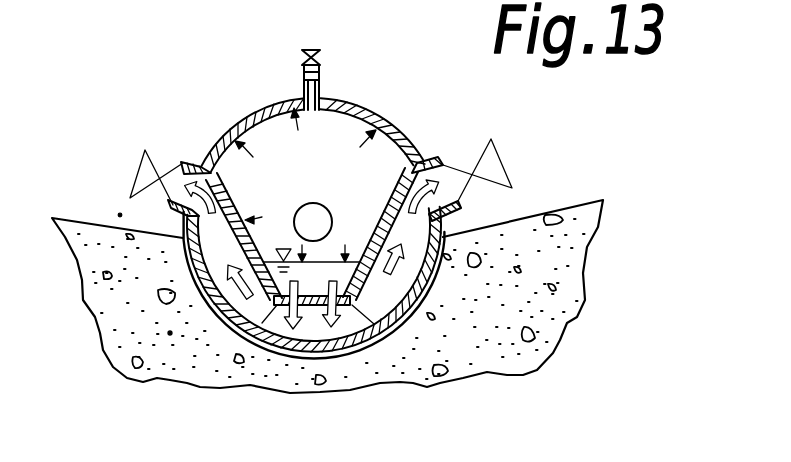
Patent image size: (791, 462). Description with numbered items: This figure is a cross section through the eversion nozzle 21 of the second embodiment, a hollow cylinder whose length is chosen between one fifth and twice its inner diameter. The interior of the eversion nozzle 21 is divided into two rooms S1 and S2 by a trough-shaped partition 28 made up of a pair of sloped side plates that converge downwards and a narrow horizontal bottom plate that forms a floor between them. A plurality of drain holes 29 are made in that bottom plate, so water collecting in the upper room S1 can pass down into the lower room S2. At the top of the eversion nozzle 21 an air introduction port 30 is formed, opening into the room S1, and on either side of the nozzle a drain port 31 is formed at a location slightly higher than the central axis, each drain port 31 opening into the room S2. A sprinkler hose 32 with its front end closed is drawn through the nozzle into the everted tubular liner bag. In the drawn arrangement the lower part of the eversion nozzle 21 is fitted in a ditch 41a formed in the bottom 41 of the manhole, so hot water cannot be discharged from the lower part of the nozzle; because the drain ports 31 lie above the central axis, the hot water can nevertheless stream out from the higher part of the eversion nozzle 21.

The eversion nozzle 21 is at (396, 116).
The partition 28 is at (383, 218).
The drain holes 29 is at (306, 316).
The air introduction port 30 is at (320, 80).
The drain port 31 is at (172, 162).
The sprinkler hose 32 is at (300, 207).
The bottom of the manhole 41 is at (568, 203).
The ditch 41a is at (224, 326).
The room S1 is at (258, 134).
The room S2 is at (359, 322).